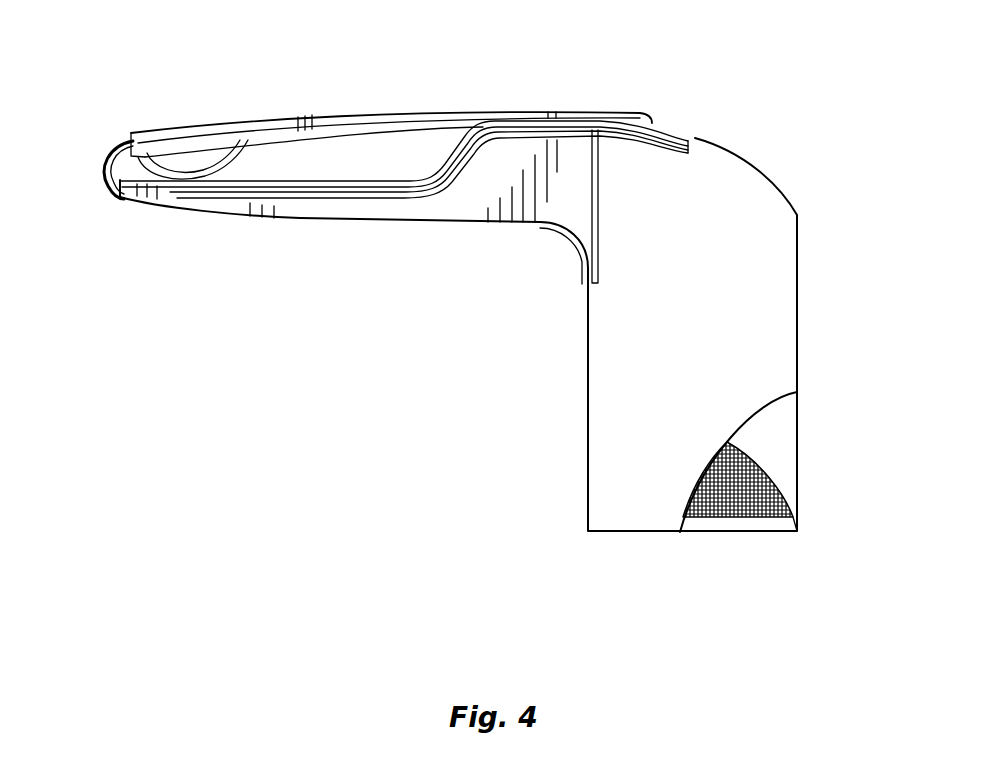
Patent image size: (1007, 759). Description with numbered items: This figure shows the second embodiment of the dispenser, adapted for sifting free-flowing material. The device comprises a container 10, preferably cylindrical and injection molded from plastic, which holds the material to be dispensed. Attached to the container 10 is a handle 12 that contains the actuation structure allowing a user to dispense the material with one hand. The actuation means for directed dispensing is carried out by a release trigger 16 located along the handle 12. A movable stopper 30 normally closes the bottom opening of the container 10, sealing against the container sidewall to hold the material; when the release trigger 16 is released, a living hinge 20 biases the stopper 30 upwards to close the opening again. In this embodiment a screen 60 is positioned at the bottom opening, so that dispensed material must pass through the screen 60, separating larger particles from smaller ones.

The container 10 is at (772, 308).
The handle 12 is at (383, 223).
The release trigger 16 is at (627, 113).
The living hinge 20 is at (107, 168).
The stopper 30 is at (765, 525).
The screen 60 is at (795, 518).